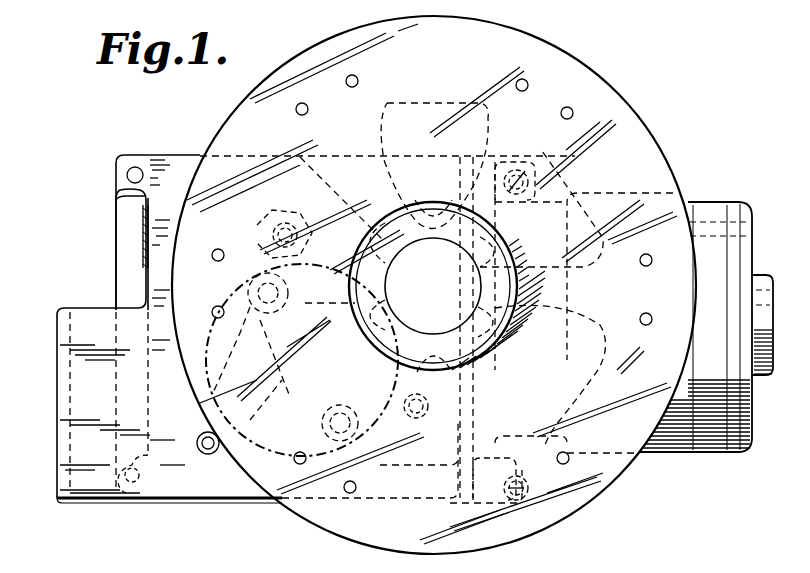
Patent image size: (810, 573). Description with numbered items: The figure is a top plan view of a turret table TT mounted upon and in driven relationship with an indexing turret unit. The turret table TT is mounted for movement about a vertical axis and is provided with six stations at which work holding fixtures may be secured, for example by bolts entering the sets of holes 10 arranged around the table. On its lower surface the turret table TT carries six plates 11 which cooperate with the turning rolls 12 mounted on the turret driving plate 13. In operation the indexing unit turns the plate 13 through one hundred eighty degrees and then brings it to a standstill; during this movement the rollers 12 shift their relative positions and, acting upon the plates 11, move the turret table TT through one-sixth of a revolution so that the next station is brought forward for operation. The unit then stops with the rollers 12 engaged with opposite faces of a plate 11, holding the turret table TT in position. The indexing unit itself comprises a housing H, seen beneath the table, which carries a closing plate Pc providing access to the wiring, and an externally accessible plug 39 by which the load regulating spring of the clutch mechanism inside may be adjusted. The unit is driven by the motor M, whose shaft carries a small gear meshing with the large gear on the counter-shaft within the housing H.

The holes 10 is at (569, 110).
The plates 11 is at (548, 162).
The turning rolls 12 is at (250, 312).
The turret driving plate 13 is at (250, 422).
The externally accessible plug 39 is at (146, 238).
The turret table TT is at (530, 147).
The motor M is at (712, 220).
The closing plate Pc is at (57, 392).
The housing H is at (194, 500).